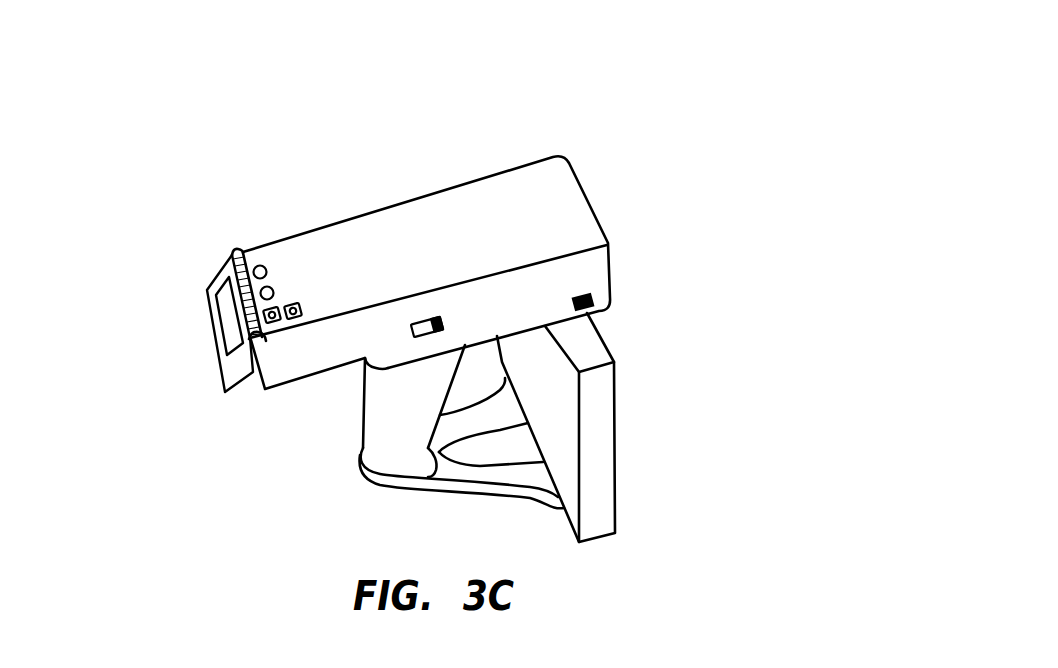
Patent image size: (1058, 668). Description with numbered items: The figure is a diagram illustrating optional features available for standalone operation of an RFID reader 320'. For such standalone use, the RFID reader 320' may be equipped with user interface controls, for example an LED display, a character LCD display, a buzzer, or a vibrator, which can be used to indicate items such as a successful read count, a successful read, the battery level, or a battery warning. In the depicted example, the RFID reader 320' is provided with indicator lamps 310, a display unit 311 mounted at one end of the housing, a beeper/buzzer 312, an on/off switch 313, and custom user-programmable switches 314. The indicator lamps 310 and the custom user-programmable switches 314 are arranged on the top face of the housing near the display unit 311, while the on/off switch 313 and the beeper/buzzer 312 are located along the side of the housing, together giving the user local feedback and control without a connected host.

The RFID reader 320' is at (382, 271).
The indicator lamps 310 is at (261, 265).
The display unit 311 is at (225, 317).
The beeper/buzzer 312 is at (592, 292).
The on/off switch 313 is at (419, 318).
The custom user-programmable switches 314 is at (290, 322).